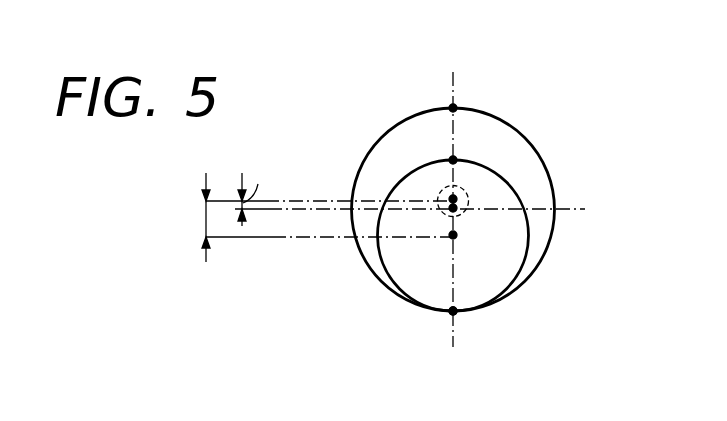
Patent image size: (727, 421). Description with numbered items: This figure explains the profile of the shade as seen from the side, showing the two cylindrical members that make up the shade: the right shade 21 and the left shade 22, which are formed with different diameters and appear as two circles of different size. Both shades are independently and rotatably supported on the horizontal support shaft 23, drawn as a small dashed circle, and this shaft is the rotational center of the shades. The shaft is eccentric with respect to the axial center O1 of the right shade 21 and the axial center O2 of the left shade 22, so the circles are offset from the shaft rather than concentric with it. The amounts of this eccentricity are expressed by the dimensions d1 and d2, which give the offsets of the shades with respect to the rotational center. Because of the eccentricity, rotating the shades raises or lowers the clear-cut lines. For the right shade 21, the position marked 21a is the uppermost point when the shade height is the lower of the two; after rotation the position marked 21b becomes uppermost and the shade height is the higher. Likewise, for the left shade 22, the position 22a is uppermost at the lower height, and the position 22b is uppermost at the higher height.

The right shade 21 is at (523, 265).
The left shade 22 is at (493, 112).
The uppermost position of right shade 21a is at (452, 160).
The uppermost position of left shade 22a is at (451, 106).
The uppermost position of right shade after rotation 21b is at (452, 313).
The uppermost position of left shade after rotation 22b is at (453, 311).
The horizontal support shaft 23 is at (465, 190).
The axial center of right shade O1 is at (455, 235).
The axial center of left shade O2 is at (455, 198).
The amount of eccentricity of right shade d1 is at (193, 217).
The amount of eccentricity of left shade d2 is at (255, 193).